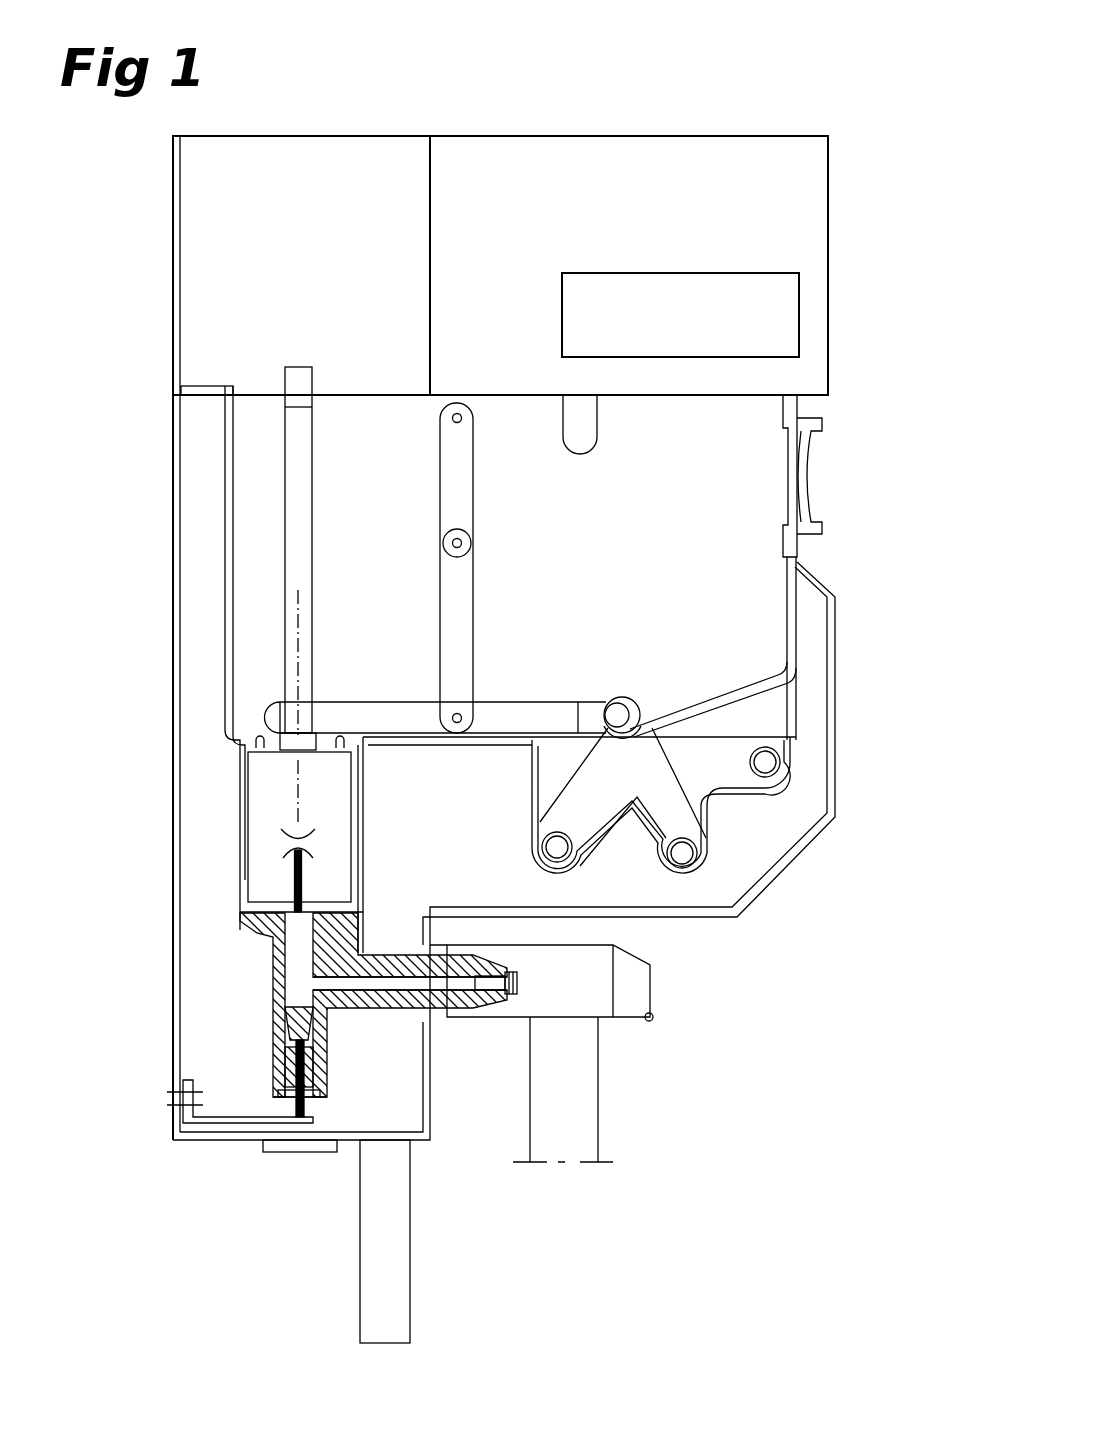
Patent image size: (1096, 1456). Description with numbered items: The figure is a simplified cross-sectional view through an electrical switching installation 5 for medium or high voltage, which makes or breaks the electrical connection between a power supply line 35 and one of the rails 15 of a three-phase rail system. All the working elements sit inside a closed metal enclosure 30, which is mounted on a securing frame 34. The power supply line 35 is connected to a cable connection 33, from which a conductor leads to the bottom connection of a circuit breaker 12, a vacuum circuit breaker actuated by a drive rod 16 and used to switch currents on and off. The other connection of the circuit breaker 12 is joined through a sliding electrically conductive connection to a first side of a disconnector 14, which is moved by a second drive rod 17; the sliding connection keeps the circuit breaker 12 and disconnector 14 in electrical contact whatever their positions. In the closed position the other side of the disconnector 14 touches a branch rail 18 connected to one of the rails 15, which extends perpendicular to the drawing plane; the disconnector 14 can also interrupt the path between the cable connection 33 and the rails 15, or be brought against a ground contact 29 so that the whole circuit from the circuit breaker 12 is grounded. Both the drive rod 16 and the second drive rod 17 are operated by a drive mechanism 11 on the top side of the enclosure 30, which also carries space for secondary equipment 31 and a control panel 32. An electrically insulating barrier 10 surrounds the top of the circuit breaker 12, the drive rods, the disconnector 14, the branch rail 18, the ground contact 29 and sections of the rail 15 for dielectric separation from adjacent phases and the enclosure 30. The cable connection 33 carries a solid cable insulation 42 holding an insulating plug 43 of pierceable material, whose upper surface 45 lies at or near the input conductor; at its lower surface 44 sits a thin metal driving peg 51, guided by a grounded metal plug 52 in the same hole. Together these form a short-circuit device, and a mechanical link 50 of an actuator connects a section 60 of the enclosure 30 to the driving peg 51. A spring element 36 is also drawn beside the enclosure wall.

The electrical switching installation 5 is at (735, 122).
The electrically insulating barrier 10 is at (228, 624).
The drive mechanism 11 is at (243, 222).
The circuit breaker 12 is at (267, 860).
The disconnector 14 is at (555, 718).
The rail 15 is at (562, 847).
The drive rod 16 is at (293, 511).
The second drive rod 17 is at (455, 588).
The branch rail 18 is at (632, 767).
The ground contact 29 is at (583, 427).
The closed enclosure 30 is at (178, 337).
The secondary equipment 31 is at (768, 313).
The control panel 32 is at (785, 217).
The cable connection 33 is at (408, 980).
The securing frame 34 is at (383, 1252).
The power supply line 35 is at (517, 982).
The spring element 36 is at (810, 448).
The solid cable insulation 42 is at (380, 955).
The insulating plug 43 is at (303, 1023).
The lower surface 44 is at (278, 1045).
The upper surface 45 is at (288, 1007).
The mechanical link 50 is at (235, 1122).
The driving peg 51 is at (303, 1108).
The metal plug 52 is at (292, 1077).
The section of the enclosure 60 is at (180, 762).